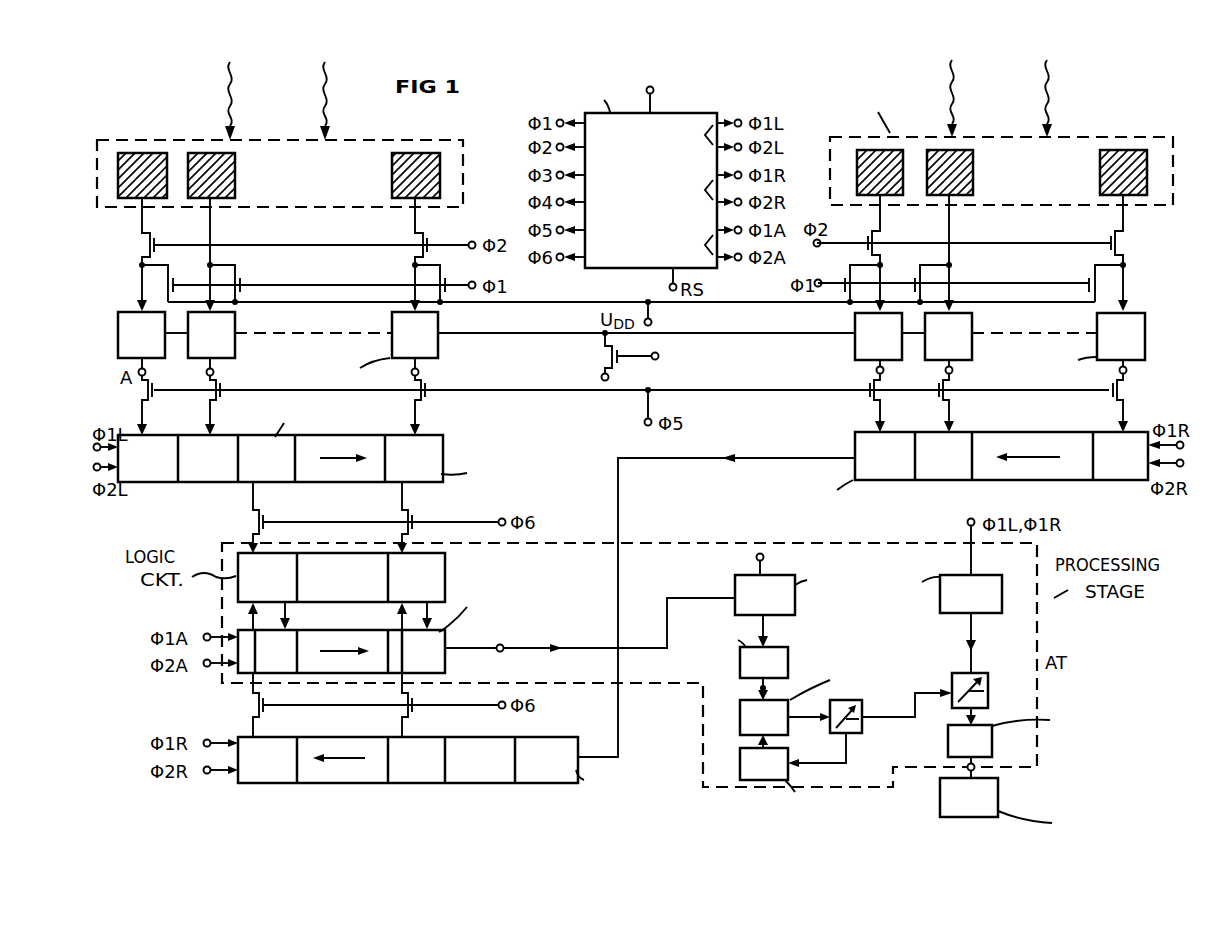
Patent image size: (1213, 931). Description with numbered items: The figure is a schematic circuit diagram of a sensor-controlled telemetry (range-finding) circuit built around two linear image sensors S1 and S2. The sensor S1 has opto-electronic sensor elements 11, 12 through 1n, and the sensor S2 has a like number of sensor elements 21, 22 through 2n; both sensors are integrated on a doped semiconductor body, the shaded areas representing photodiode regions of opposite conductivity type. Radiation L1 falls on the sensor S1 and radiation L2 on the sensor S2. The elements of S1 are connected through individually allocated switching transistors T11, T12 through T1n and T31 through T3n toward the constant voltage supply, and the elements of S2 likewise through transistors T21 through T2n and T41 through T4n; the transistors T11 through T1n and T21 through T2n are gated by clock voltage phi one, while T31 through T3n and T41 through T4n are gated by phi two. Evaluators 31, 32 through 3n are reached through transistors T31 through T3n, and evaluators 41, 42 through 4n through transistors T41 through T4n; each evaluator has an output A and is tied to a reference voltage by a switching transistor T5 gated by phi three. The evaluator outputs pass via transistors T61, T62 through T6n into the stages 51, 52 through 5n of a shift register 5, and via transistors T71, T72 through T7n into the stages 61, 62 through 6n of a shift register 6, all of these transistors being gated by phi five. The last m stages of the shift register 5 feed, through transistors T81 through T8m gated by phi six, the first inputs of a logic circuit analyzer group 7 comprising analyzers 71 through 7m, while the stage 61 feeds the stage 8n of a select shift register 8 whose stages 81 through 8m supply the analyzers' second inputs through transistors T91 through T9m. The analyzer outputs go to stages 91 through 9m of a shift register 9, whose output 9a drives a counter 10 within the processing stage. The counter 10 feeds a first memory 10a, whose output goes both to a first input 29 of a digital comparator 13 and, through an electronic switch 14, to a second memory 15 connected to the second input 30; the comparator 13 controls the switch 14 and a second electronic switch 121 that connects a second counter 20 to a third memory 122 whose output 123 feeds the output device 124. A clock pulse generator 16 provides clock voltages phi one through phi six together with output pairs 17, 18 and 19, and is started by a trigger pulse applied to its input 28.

The opto-electronic sensor element 11 is at (120, 195).
The opto-electronic sensor element 12 is at (182, 105).
The opto-electronic sensor element 1n is at (393, 195).
The opto-electronic sensor element 21 is at (857, 193).
The opto-electronic sensor element 22 is at (972, 193).
The opto-electronic sensor element 2n is at (1101, 193).
The linear image sensor S1 is at (159, 138).
The linear image sensor S2 is at (1115, 137).
The radiation L1 is at (277, 101).
The radiation L2 is at (999, 98).
The evaluator 31 is at (141, 335).
The evaluator 32 is at (211, 335).
The evaluator 3n is at (339, 350).
The evaluator 41 is at (878, 336).
The evaluator 42 is at (948, 336).
The evaluator 4n is at (1055, 350).
The shift register 5 is at (330, 459).
The shift register stage 51 is at (157, 458).
The shift register stage 52 is at (217, 458).
The shift register stage 5n is at (414, 460).
The shift register 6 is at (949, 476).
The shift register stage 61 is at (894, 456).
The shift register stage 62 is at (951, 456).
The shift register stage 6n is at (1120, 458).
The shift register of logic circuit 7 is at (391, 579).
The logic circuit analyzer 71 is at (276, 577).
The logic circuit analyzer 7m is at (409, 577).
The shift register 9 is at (352, 640).
The shift register stage 91 is at (280, 651).
The shift register stage 9m is at (413, 651).
The output of shift register 9a is at (590, 625).
The select shift register 8 is at (464, 775).
The select shift register stage 81 is at (267, 761).
The select shift register stage 8m is at (416, 761).
The select shift register stage 8n is at (546, 761).
The counter 10 is at (822, 582).
The first memory 10a is at (730, 652).
The digital comparator 13 is at (830, 695).
The electronic switch 14 is at (860, 708).
The second memory 15 is at (790, 786).
The clock pulse generator 16 is at (613, 167).
The output pair 17 is at (696, 135).
The output pair 18 is at (696, 190).
The output pair 19 is at (696, 245).
The second counter 20 is at (962, 594).
The input 28 is at (680, 94).
The first input 29 is at (758, 690).
The second input 30 is at (757, 742).
The second electronic switch 121 is at (990, 690).
The third memory 122 is at (1040, 734).
The output 123 is at (975, 769).
The output device 124 is at (1036, 806).
The switching transistor T31 is at (164, 250).
The switching transistor T3n is at (402, 250).
The switching transistor T11 is at (177, 278).
The switching transistor T12 is at (247, 278).
The switching transistor T1n is at (446, 276).
The switching transistor T41 is at (893, 248).
The switching transistor T4n is at (1100, 248).
The switching transistor T21 is at (849, 276).
The switching transistor T2n is at (1086, 278).
The switching transistor T5 is at (609, 367).
The switching transistor T61 is at (164, 396).
The switching transistor T62 is at (229, 396).
The switching transistor T6n is at (434, 396).
The switching transistor T71 is at (858, 396).
The switching transistor T72 is at (927, 396).
The switching transistor T7n is at (1101, 396).
The switching transistor T81 is at (272, 517).
The switching transistor T8m is at (422, 517).
The switching transistor T91 is at (276, 705).
The switching transistor T9m is at (426, 705).